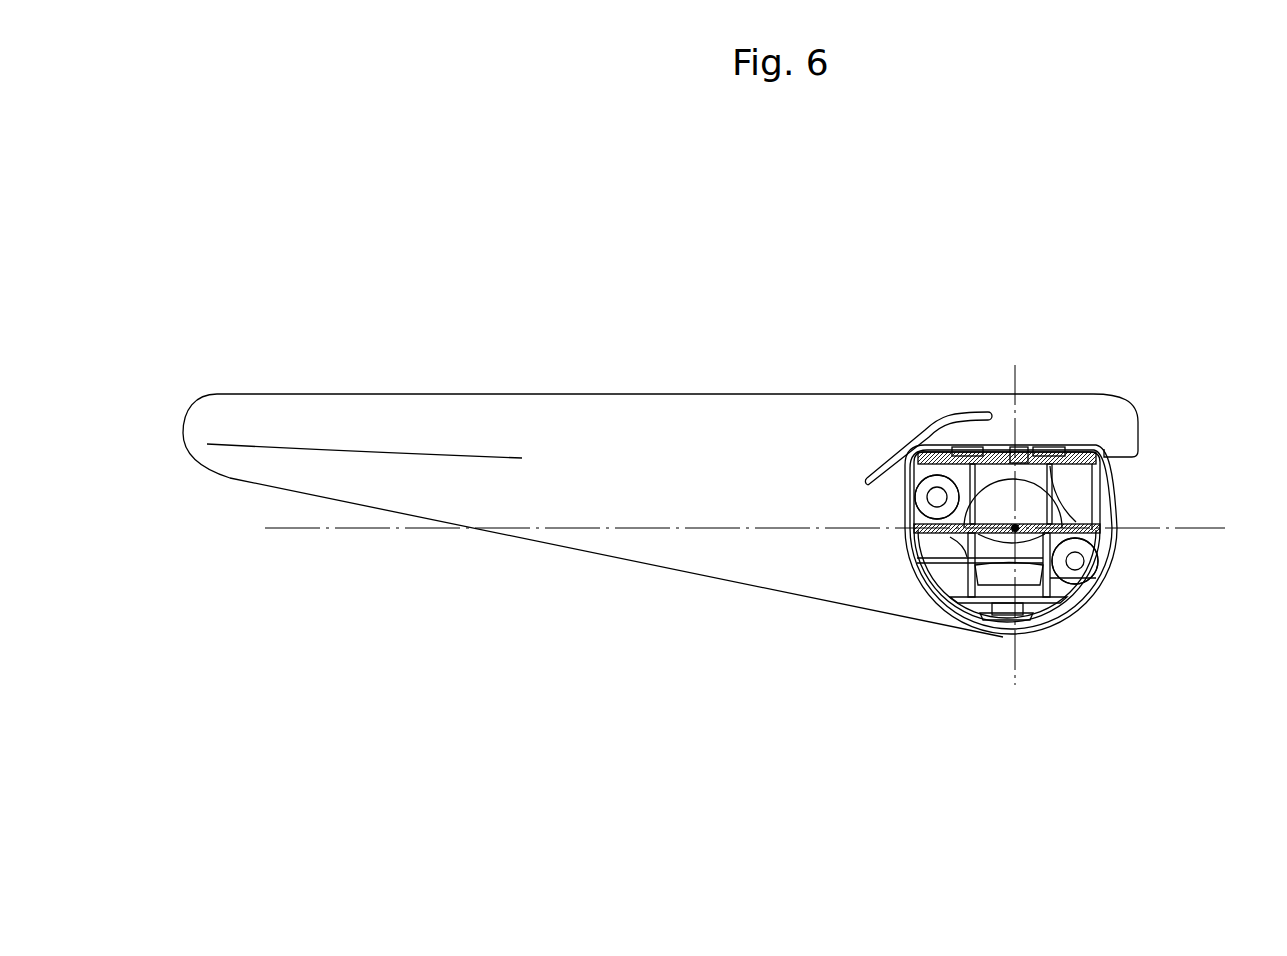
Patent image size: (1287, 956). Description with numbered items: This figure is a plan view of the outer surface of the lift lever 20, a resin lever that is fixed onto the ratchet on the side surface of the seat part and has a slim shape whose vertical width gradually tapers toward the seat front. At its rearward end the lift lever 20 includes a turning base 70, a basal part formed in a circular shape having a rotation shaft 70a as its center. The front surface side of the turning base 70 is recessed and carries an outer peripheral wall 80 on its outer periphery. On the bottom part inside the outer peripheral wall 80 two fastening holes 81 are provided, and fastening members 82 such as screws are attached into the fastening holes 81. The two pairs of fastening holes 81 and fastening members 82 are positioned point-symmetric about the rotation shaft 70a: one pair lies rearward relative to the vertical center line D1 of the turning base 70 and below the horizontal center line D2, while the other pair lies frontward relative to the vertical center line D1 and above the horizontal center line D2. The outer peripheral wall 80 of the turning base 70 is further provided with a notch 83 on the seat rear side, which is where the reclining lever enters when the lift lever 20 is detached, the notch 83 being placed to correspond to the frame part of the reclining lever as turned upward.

The lift lever 20 is at (679, 396).
The turning base 70 is at (1079, 623).
The rotation shaft 70a is at (1015, 526).
The outer peripheral wall 80 is at (923, 585).
The fastening holes 81 is at (936, 487).
The fastening members 82 is at (1006, 529).
The notch 83 is at (1112, 485).
The vertical center line D1 is at (1015, 365).
The horizontal center line D2 is at (1190, 527).